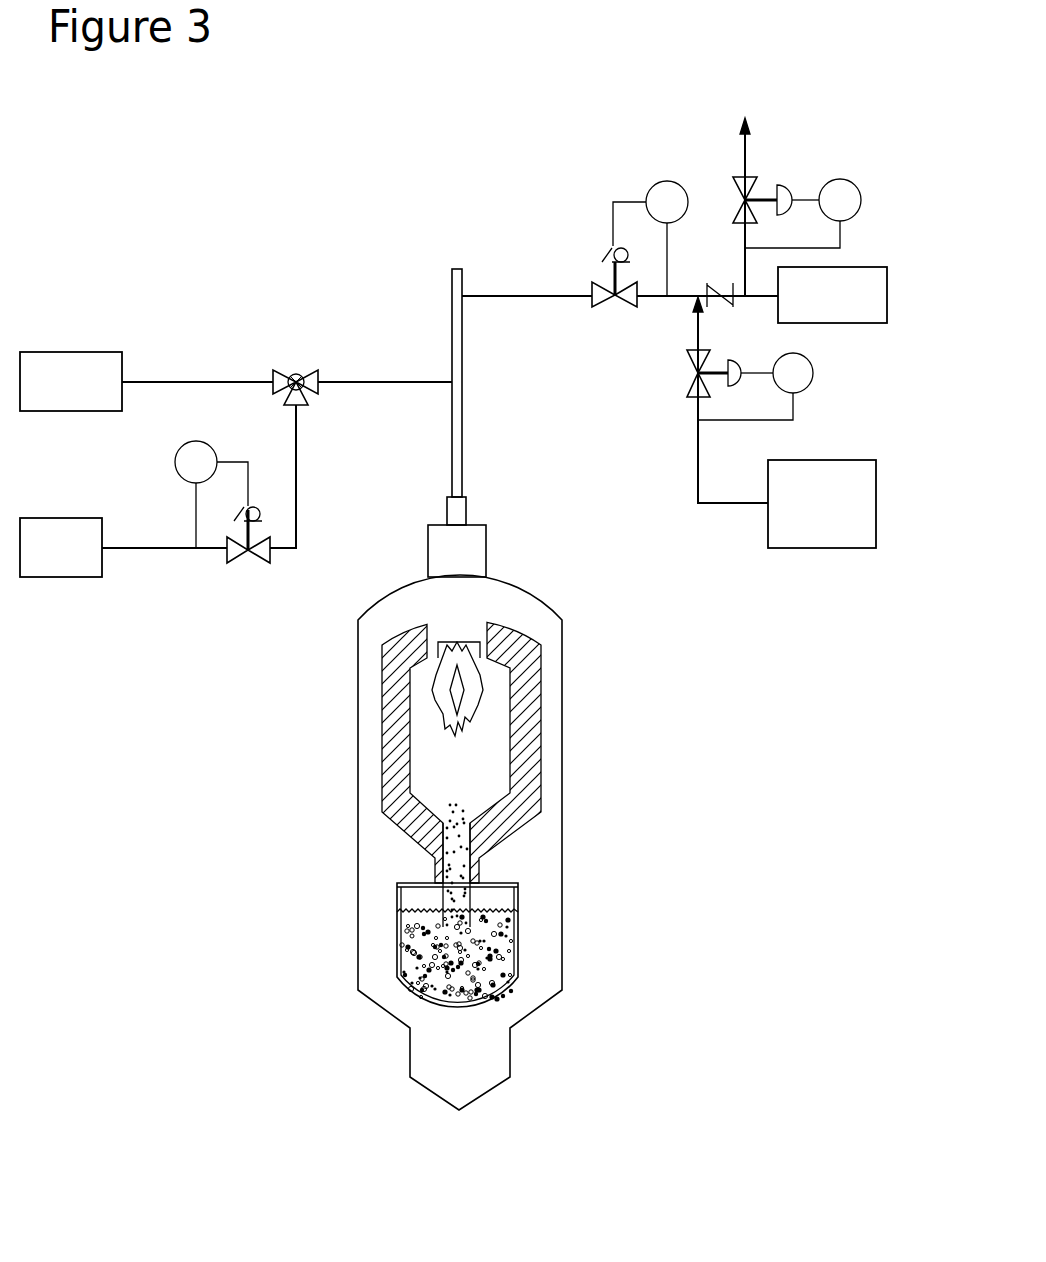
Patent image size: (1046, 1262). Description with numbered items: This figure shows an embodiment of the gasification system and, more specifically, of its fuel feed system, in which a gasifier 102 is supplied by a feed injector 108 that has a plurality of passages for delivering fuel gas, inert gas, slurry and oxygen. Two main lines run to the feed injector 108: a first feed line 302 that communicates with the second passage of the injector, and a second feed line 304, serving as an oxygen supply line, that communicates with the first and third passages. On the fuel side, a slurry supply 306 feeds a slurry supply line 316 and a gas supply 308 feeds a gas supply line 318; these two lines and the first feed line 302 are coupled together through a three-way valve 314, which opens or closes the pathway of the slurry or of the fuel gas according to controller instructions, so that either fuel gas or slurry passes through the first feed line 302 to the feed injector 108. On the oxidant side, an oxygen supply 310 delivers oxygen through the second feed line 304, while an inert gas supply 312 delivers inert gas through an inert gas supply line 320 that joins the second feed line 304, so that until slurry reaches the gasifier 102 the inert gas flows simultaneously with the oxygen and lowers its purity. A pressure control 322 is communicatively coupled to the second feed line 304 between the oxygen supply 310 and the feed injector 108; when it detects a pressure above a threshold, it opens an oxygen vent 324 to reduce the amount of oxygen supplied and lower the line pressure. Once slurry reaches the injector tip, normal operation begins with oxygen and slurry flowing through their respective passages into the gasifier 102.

The gasifier 102 is at (520, 586).
The feed injector 108 is at (464, 365).
The first feed line 302 is at (342, 378).
The second feed line 304 is at (494, 297).
The slurry supply 306 is at (45, 352).
The gas supply 308 is at (45, 518).
The oxygen supply 310 is at (827, 323).
The inert gas supply 312 is at (810, 460).
The three-way valve 314 is at (293, 374).
The slurry supply line 316 is at (213, 381).
The gas supply line 318 is at (296, 470).
The inert gas supply line 320 is at (698, 455).
The pressure control 322 is at (838, 180).
The oxygen vent 324 is at (745, 176).